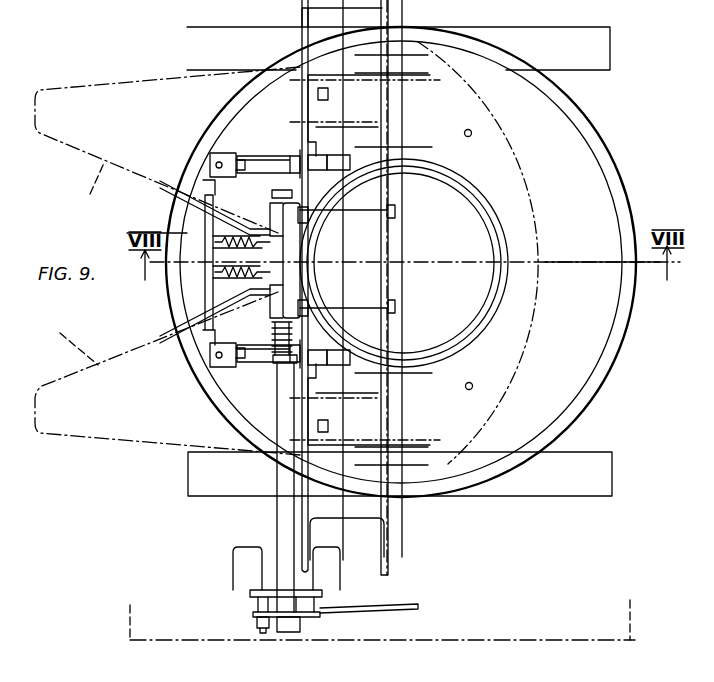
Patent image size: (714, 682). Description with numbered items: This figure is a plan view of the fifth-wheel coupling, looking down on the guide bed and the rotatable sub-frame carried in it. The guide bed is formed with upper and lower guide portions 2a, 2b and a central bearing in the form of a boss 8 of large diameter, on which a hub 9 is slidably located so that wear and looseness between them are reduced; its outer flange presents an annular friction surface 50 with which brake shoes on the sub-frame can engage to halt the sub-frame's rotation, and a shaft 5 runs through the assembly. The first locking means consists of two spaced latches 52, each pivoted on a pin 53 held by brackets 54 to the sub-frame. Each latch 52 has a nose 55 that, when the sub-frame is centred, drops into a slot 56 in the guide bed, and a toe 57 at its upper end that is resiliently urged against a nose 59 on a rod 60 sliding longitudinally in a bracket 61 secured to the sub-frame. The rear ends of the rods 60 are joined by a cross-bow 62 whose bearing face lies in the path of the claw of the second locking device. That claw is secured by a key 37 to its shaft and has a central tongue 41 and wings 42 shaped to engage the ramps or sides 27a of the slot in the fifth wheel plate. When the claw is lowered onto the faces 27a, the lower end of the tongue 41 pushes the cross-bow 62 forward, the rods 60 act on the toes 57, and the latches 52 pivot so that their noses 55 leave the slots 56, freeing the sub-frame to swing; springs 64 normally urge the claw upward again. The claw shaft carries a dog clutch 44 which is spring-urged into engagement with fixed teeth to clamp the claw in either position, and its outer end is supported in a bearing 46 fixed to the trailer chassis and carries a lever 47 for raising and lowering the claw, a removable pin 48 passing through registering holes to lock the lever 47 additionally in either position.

The upper guide rail 2a is at (396, 36).
The lower guide rail 2b is at (325, 65).
The vertical shaft rail 5 is at (402, 263).
The boss 8 is at (480, 192).
The hub 9 is at (493, 232).
The ramps or sides of the slot 27a is at (167, 261).
The key 37 is at (283, 397).
The central tongue 41 is at (158, 262).
The wings 42 is at (177, 202).
The dog clutch 44 is at (222, 214).
The bearing 46 is at (284, 621).
The lever 47 is at (337, 613).
The removable pin 48 is at (260, 623).
The annular friction surface 50 is at (343, 263).
The latches 52 is at (300, 158).
The pin 53 is at (308, 199).
The brackets 54 is at (310, 120).
The nose 55 is at (236, 150).
The slot 56 is at (232, 152).
The toe 57 is at (336, 162).
The nose 59 is at (336, 156).
The rod 60 is at (317, 154).
The bracket 61 is at (252, 170).
The cross-bow 62 is at (270, 226).
The springs 64 is at (245, 275).